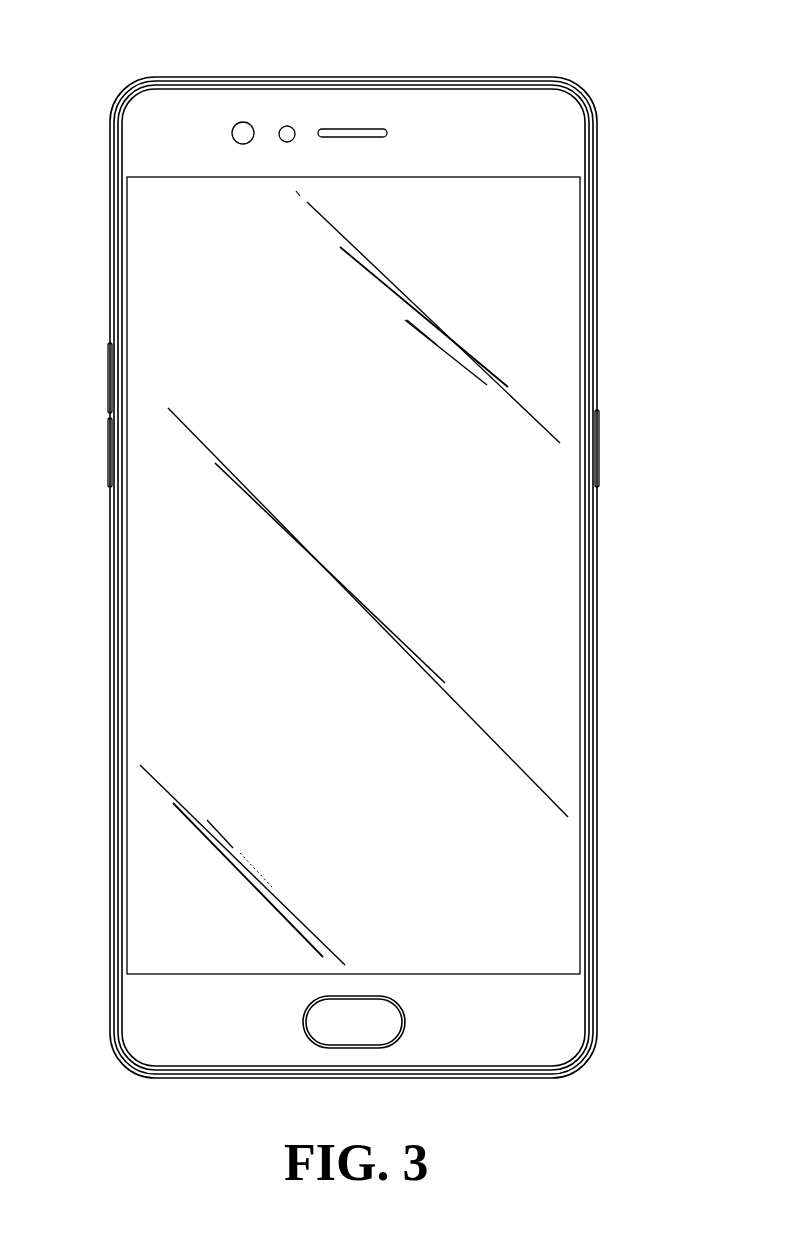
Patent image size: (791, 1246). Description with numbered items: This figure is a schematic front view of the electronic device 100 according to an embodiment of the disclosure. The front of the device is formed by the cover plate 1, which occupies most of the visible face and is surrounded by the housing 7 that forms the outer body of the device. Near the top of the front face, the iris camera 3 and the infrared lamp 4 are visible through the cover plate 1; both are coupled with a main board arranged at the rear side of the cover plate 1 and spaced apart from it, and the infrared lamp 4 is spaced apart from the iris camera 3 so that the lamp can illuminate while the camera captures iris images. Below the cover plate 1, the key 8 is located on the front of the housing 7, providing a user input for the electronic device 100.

The electronic device 100 is at (359, 540).
The cover plate 1 is at (165, 280).
The iris camera 3 is at (243, 122).
The infrared lamp 4 is at (290, 125).
The housing 7 is at (598, 330).
The key 8 is at (335, 1022).